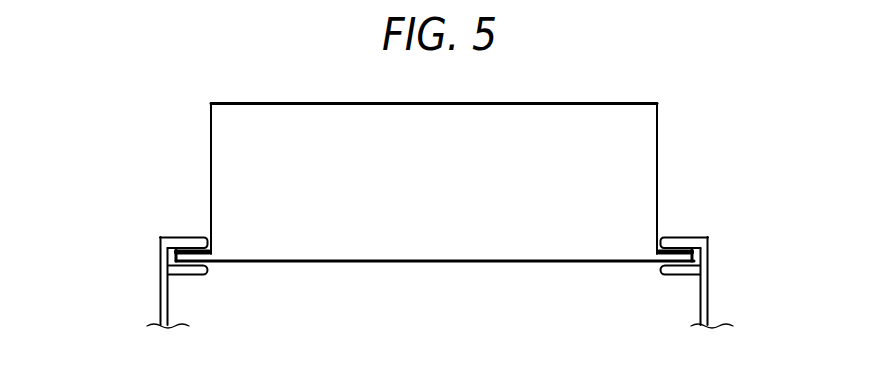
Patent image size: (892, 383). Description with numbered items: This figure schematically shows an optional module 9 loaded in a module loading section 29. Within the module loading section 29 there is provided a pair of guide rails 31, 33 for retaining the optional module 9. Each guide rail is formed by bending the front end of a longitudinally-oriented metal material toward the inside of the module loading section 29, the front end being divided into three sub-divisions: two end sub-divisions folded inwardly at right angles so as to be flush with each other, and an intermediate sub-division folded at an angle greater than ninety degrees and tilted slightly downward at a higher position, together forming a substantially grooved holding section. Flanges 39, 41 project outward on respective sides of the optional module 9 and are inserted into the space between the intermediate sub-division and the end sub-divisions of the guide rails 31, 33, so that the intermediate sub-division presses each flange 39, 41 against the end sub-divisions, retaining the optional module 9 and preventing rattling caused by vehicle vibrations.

The optional module 9 is at (668, 135).
The module loading section 29 is at (176, 150).
The guide rail 31 is at (150, 246).
The guide rail 33 is at (720, 247).
The flange 39 is at (193, 277).
The flange 41 is at (675, 277).